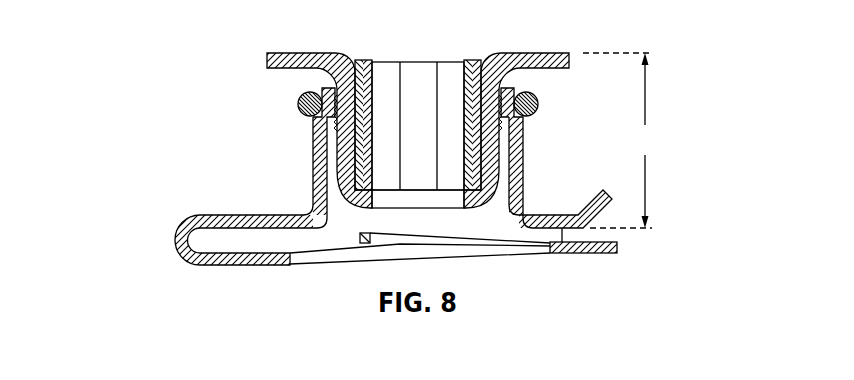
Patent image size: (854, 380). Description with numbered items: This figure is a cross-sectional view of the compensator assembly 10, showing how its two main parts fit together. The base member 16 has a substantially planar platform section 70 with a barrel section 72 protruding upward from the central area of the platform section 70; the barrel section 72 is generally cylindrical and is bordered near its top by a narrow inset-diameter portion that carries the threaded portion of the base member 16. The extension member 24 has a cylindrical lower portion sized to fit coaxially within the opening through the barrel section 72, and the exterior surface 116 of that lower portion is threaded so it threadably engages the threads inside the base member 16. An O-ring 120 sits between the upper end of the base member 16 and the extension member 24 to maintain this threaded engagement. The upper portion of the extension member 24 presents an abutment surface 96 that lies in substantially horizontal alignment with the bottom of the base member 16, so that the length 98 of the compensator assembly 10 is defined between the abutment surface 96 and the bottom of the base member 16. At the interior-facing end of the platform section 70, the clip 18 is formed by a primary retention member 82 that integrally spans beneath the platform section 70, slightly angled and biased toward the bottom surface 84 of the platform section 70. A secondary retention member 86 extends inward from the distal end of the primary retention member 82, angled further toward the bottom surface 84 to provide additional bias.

The compensator assembly 10 is at (180, 88).
The extension member 24 is at (286, 46).
The abutment surface 96 is at (540, 51).
The O-ring 120 is at (538, 103).
The exterior surface 116 is at (496, 147).
The length 98 is at (618, 140).
The barrel section 72 is at (313, 160).
The platform section 70 is at (236, 211).
The base member 16 is at (170, 225).
The clip 18 is at (212, 279).
The primary retention member 82 is at (257, 267).
The secondary retention member 86 is at (358, 240).
The bottom surface 84 is at (563, 254).